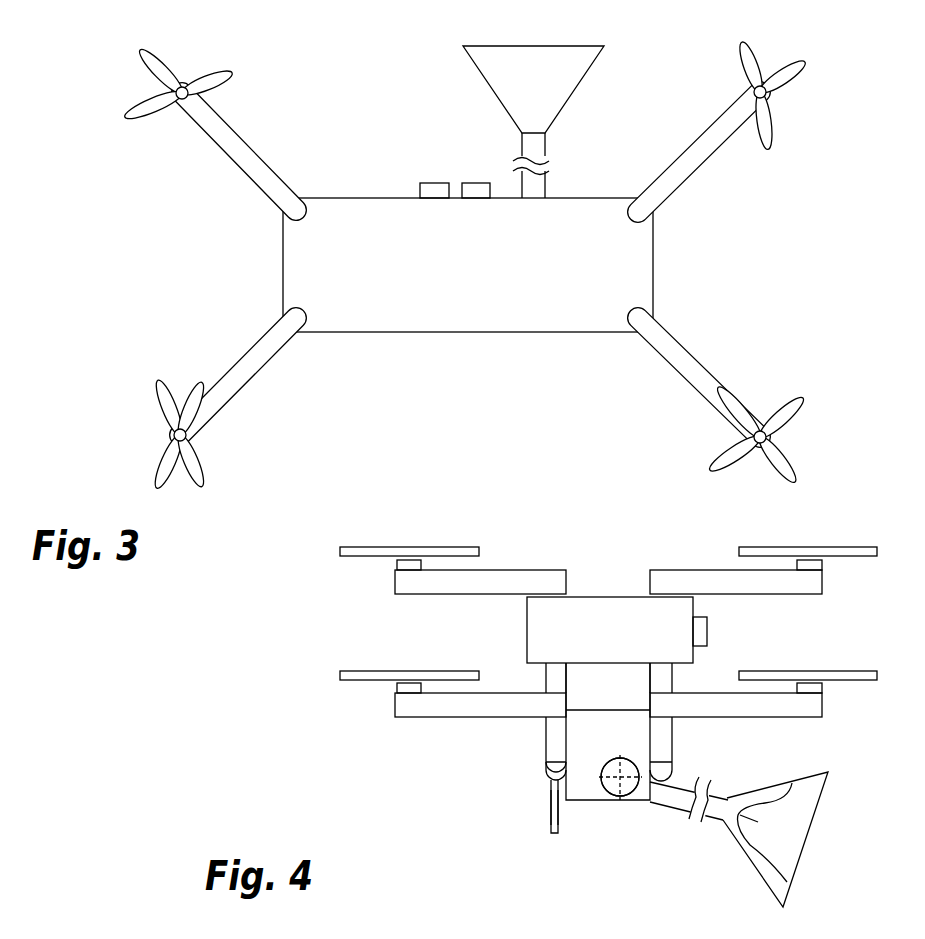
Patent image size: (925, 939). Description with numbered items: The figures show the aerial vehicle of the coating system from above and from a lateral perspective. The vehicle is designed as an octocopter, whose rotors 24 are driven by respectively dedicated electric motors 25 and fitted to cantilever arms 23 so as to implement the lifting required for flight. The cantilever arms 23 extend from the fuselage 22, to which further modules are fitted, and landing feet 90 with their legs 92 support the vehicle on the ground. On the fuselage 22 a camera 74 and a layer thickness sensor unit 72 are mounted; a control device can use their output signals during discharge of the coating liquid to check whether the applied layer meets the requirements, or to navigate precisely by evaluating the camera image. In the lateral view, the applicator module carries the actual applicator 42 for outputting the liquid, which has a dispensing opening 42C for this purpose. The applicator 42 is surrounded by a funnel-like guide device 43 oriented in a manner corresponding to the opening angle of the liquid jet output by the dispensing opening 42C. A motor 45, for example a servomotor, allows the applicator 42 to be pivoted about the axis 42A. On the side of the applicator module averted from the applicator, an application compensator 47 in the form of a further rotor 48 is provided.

In FIG. 3, the fuselage 22 is at (258, 254).
In FIG. 4, the fuselage 22 is at (628, 611).
In FIG. 3, the cantilever arm 23 is at (244, 160).
In FIG. 4, the cantilever arm 23 is at (553, 578).
In FIG. 3, the propeller 24 is at (780, 82).
In FIG. 4, the propeller 24 is at (458, 673).
In FIG. 4, the electric motor 25 is at (400, 565).
In FIG. 4, the applicator 42 is at (731, 788).
In FIG. 4, the axis 42A is at (618, 783).
In FIG. 4, the dispensing opening 42C is at (795, 865).
In FIG. 3, the funnel-like guide device 43 is at (523, 75).
In FIG. 4, the funnel-like guide device 43 is at (793, 812).
In FIG. 4, the motor 45 is at (633, 783).
In FIG. 4, the application compensator 47 is at (537, 838).
In FIG. 4, the further rotor 48 is at (553, 803).
In FIG. 3, the layer thickness sensor unit 72 is at (476, 190).
In FIG. 4, the layer thickness sensor unit 72 is at (781, 639).
In FIG. 3, the camera 74 is at (437, 190).
In FIG. 4, the camera 74 is at (707, 630).
In FIG. 4, the landing foot 90 is at (550, 773).
In FIG. 4, the landing leg 92 is at (556, 762).